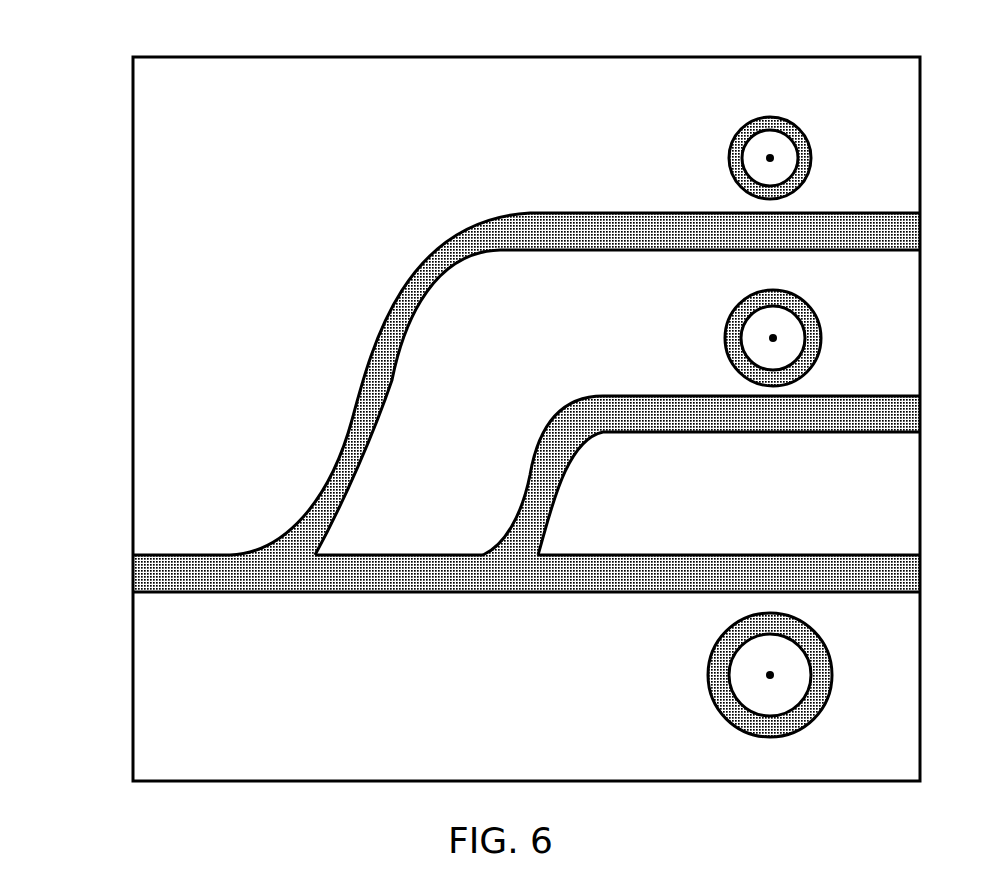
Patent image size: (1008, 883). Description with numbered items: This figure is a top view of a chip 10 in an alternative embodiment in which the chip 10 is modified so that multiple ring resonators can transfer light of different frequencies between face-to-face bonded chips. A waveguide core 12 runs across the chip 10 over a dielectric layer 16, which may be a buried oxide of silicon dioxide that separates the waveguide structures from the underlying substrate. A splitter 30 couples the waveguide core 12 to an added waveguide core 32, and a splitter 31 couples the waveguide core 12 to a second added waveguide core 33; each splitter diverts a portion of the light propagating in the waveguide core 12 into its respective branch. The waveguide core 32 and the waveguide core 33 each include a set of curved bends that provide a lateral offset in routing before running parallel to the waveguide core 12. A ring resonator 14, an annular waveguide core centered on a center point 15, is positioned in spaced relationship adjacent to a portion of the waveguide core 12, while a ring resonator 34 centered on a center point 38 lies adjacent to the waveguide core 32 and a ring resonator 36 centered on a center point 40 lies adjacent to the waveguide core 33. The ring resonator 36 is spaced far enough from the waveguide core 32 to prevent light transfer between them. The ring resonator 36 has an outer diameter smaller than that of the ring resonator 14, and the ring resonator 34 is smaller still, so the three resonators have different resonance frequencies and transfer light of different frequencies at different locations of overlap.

The chip 10 is at (122, 55).
The waveguide core 12 is at (601, 580).
The ring resonator 14 is at (815, 692).
The center point 15 is at (770, 675).
The dielectric layer 16 is at (170, 700).
The splitter 30 is at (217, 526).
The splitter 31 is at (466, 528).
The waveguide core 32 is at (611, 230).
The waveguide core 33 is at (784, 414).
The ring resonator 34 is at (812, 159).
The ring resonator 36 is at (812, 342).
The center point 38 is at (770, 158).
The center point 40 is at (773, 338).